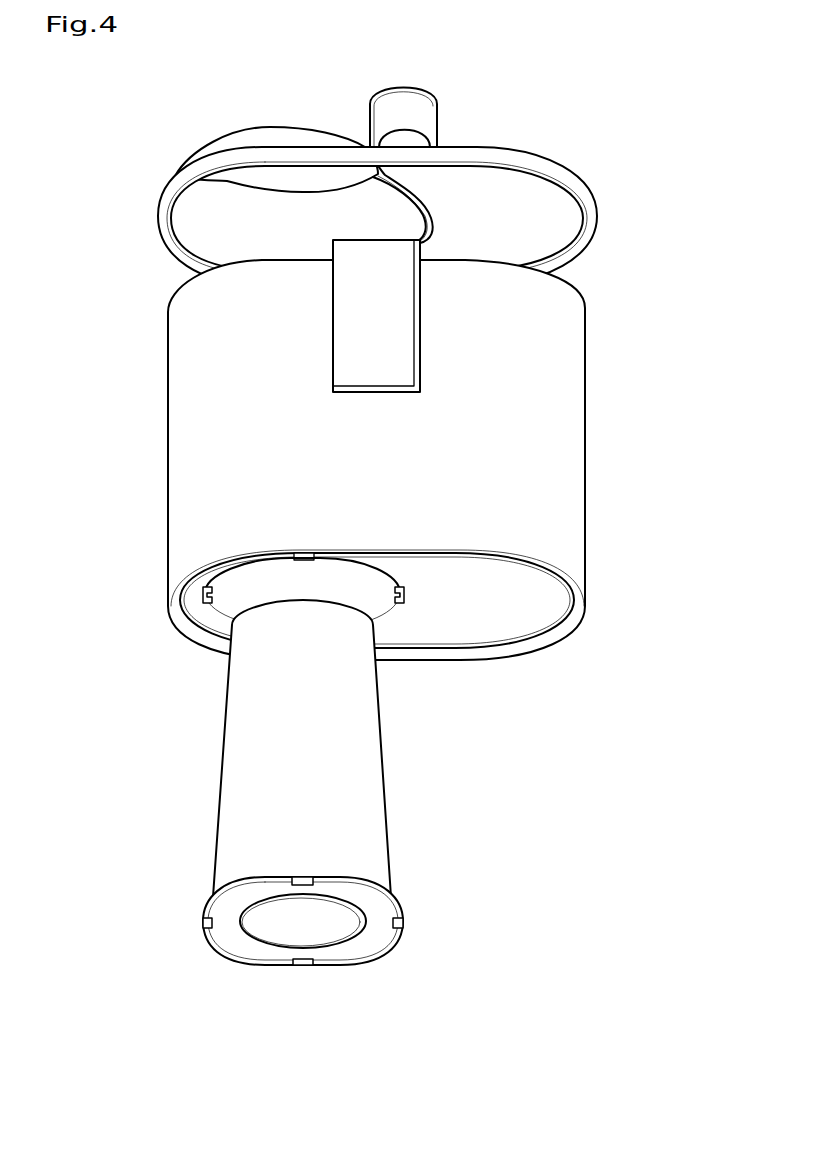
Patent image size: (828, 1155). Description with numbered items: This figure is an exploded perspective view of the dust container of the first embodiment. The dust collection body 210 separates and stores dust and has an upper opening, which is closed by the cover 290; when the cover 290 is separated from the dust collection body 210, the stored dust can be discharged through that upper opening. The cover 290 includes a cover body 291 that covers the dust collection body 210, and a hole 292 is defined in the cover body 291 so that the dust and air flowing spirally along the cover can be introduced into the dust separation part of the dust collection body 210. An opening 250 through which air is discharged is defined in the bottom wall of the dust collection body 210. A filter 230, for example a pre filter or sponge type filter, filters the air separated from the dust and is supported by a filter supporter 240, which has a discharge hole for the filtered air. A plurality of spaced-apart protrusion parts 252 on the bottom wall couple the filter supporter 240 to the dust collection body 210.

The dust collection body 210 is at (150, 392).
The filter 230 is at (370, 813).
The filter supporter 240 is at (385, 936).
The opening 250 is at (374, 624).
The protrusion parts 252 is at (401, 606).
The cover 290 is at (419, 171).
The cover body 291 is at (543, 217).
The hole 292 is at (428, 194).